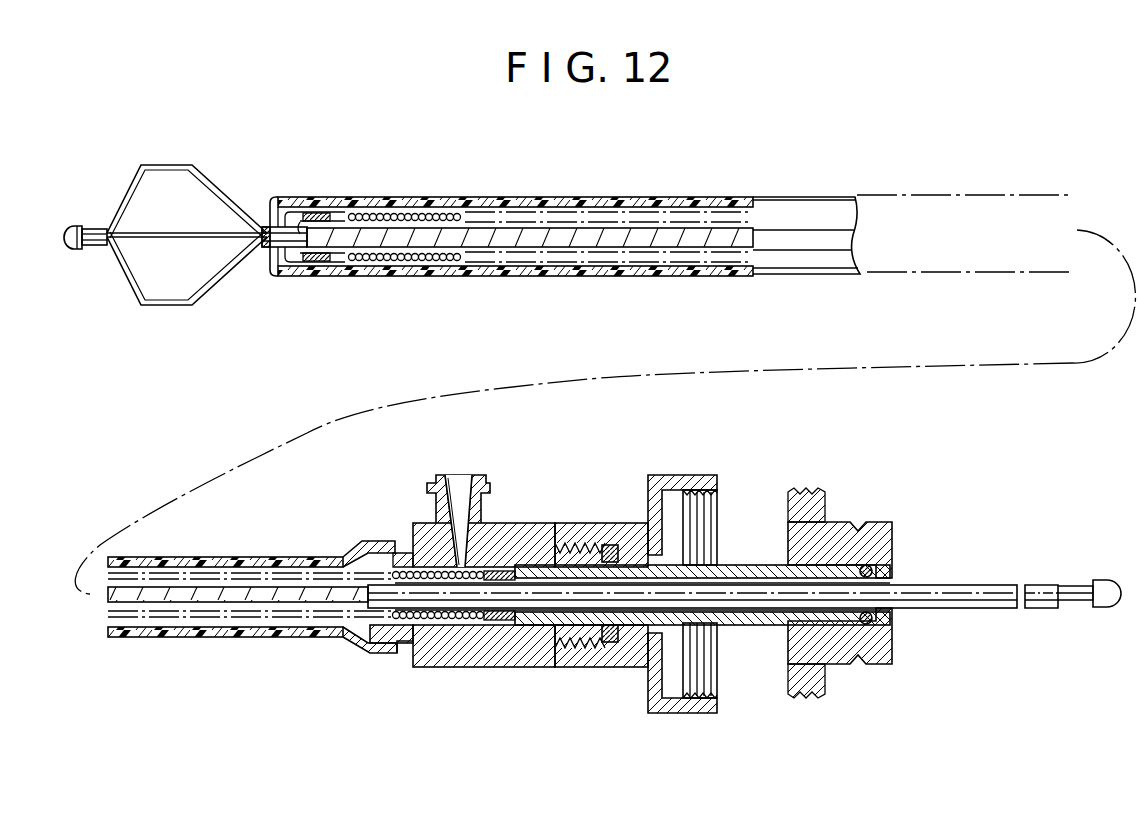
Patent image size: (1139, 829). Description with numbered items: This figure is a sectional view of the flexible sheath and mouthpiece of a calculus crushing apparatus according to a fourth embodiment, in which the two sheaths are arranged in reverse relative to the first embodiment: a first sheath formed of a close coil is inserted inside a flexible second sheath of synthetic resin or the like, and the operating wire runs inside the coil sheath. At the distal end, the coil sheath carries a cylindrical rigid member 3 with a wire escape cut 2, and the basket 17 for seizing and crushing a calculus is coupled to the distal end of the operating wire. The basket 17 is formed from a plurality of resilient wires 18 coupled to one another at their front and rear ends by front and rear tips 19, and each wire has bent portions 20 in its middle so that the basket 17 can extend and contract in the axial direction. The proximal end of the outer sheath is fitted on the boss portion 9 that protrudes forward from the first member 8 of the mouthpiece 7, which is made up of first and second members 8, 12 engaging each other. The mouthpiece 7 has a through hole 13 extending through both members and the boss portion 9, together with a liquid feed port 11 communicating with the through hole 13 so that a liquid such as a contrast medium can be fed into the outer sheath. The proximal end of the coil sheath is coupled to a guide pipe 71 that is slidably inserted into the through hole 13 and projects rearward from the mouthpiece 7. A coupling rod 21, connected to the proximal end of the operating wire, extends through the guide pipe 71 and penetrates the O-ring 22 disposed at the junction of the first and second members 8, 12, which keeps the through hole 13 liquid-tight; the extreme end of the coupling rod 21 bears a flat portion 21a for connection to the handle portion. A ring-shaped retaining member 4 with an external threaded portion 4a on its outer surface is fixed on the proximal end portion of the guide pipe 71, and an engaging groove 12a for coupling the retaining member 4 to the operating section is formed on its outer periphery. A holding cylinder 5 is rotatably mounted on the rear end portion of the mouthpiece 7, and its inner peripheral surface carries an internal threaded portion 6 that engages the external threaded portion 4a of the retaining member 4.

The wire escape cut 2 is at (294, 212).
The cylindrical rigid member 3 is at (318, 212).
The retaining member 4 is at (858, 570).
The external threaded portion 4a is at (806, 492).
The holding cylinder 5 is at (693, 480).
The internal threaded portion 6 is at (695, 571).
The mouthpiece 7 is at (530, 593).
The first member 8 is at (500, 667).
The boss portion 9 is at (372, 652).
The liquid feed port 11 is at (467, 476).
The second member 12 is at (620, 667).
The engaging groove 12a is at (860, 530).
The through hole 13 is at (405, 565).
The basket 17 is at (169, 236).
The resilient wires 18 is at (224, 240).
The front and rear tips 19 is at (100, 228).
The bent portions 20 is at (174, 160).
The coupling rod 21 is at (744, 591).
The flat portion 21a is at (1074, 585).
The O-ring 22 is at (608, 545).
The guide pipe 71 is at (750, 625).